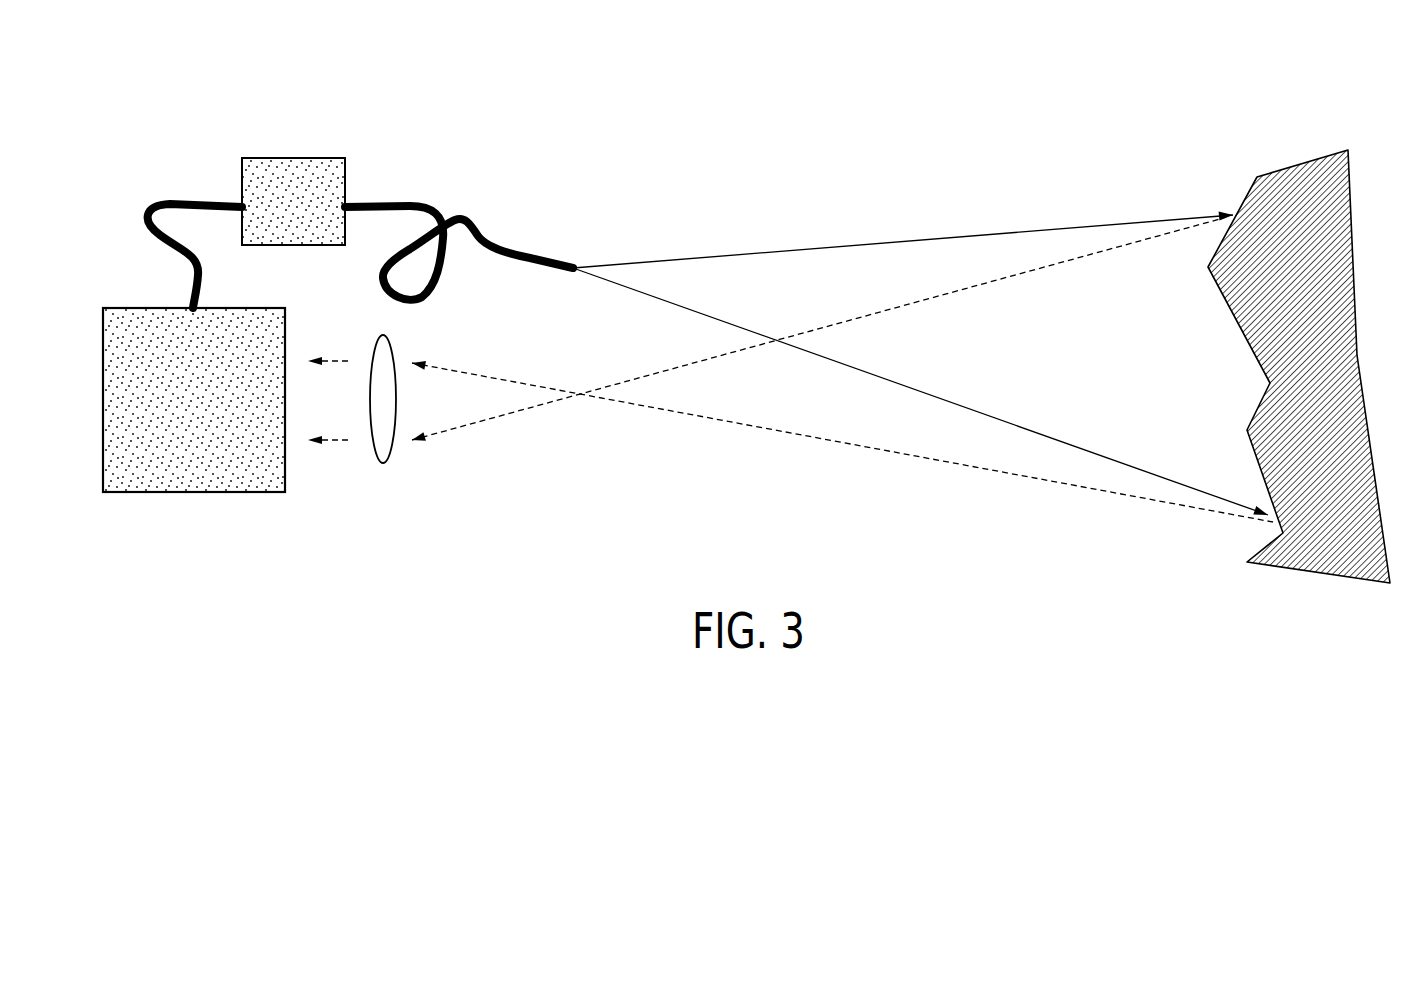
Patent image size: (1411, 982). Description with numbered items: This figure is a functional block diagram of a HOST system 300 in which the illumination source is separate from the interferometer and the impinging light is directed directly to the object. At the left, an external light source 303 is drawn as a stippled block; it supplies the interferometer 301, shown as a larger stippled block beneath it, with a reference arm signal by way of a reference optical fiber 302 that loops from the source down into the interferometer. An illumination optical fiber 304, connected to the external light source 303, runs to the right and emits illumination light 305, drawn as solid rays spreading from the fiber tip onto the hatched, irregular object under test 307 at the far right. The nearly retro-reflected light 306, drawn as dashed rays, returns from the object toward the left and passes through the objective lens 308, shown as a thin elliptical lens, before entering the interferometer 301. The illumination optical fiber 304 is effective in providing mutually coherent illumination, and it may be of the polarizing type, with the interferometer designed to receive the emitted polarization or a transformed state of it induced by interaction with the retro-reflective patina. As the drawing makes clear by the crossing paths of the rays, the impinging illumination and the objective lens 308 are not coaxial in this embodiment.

The HOST system 300 is at (1118, 167).
The interferometer 301 is at (197, 492).
The reference optical fiber 302 is at (162, 202).
The external light source 303 is at (304, 158).
The illumination optical fiber 304 is at (458, 217).
The illumination light 305 is at (778, 252).
The nearly retro-reflected light 306 is at (813, 438).
The object under test 307 is at (1250, 335).
The objective lens 308 is at (383, 463).